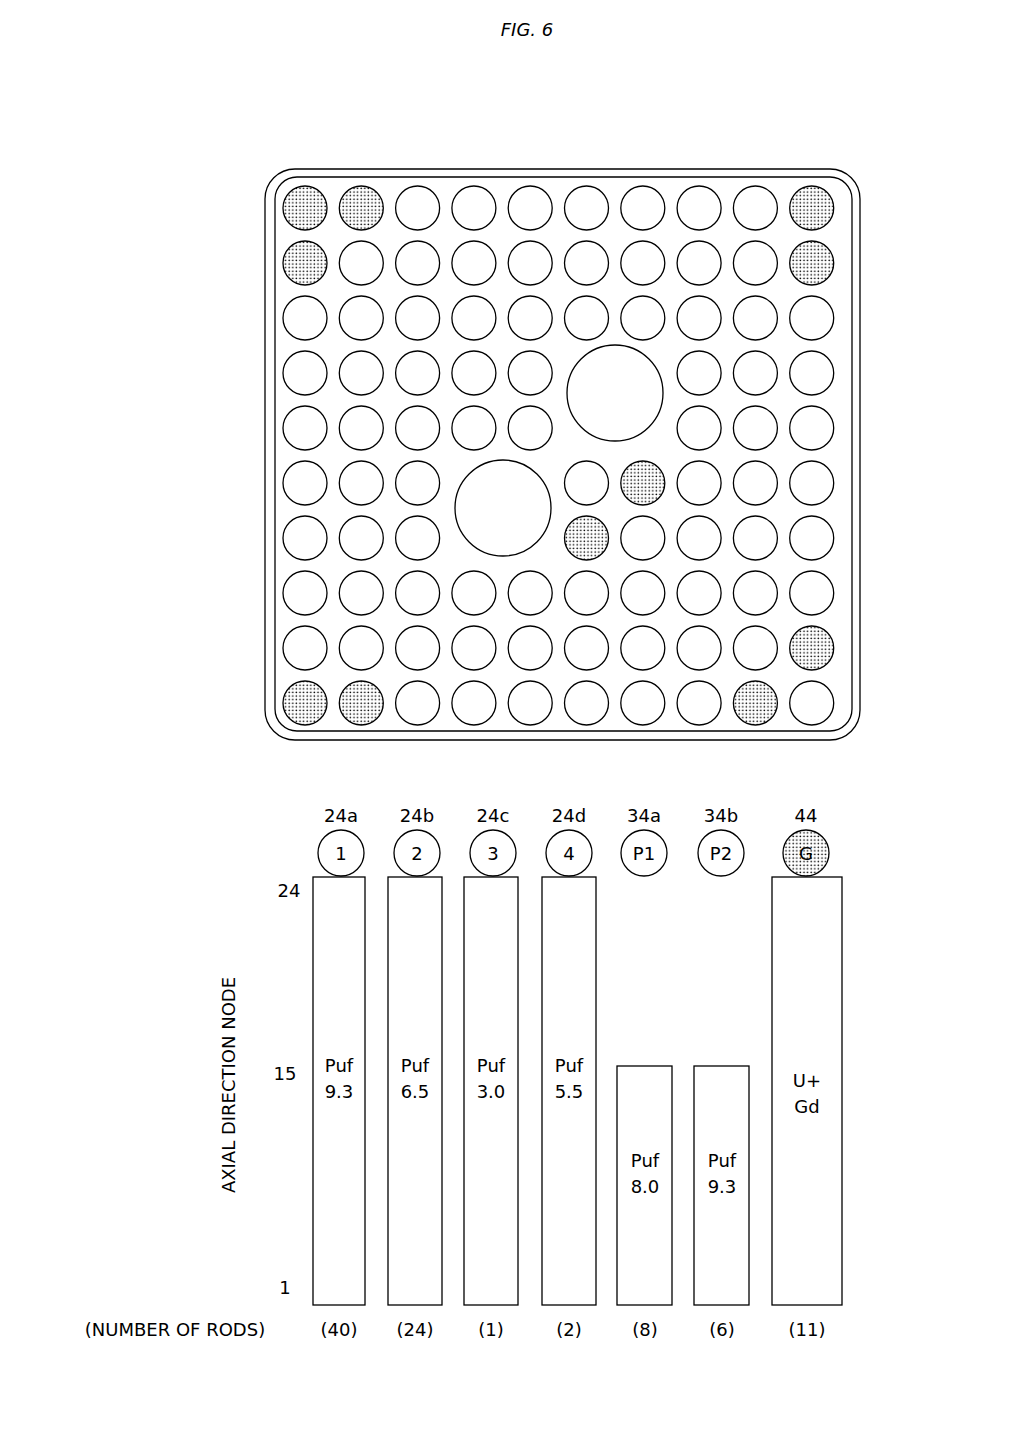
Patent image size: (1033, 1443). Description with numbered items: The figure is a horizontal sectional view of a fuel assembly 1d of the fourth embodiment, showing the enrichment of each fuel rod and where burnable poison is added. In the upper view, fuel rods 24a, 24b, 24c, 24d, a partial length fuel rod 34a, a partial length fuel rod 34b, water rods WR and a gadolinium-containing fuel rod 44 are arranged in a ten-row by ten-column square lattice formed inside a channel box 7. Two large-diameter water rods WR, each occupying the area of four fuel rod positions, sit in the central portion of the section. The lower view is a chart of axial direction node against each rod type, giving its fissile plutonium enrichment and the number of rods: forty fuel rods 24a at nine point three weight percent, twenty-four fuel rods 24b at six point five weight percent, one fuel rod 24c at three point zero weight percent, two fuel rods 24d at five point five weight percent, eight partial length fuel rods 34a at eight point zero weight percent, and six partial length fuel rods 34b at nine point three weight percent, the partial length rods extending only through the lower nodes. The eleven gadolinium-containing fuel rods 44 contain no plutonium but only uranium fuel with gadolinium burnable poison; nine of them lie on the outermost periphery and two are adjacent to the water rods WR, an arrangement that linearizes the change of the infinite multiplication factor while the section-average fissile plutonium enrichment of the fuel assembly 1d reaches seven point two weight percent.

The fuel assembly 1d is at (430, 152).
The channel box 7 is at (862, 397).
The fuel rod 24a is at (549, 252).
The fuel rod 24b is at (835, 313).
The fuel rod 24c is at (835, 700).
The fuel rod 24d is at (285, 648).
The partial length fuel rod 34a is at (342, 390).
The partial length fuel rod 34b is at (343, 278).
The gadolinium-containing fuel rod 44 is at (835, 200).